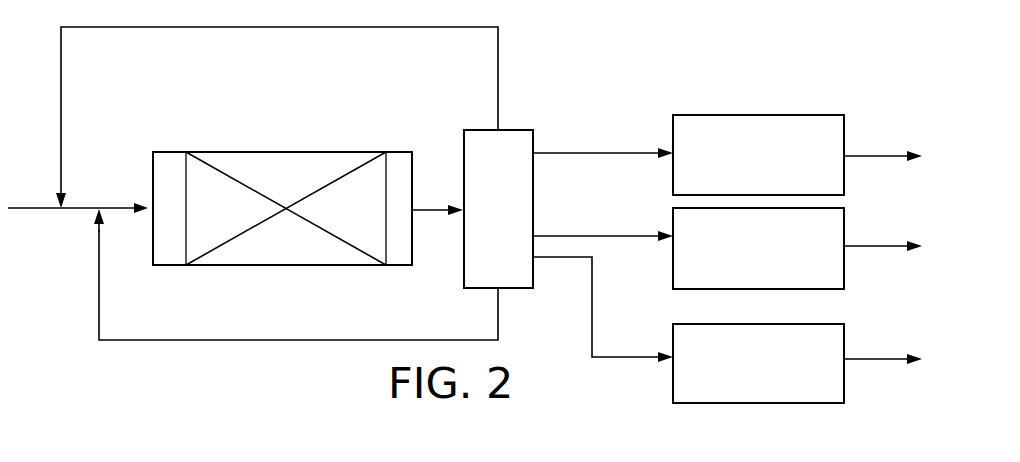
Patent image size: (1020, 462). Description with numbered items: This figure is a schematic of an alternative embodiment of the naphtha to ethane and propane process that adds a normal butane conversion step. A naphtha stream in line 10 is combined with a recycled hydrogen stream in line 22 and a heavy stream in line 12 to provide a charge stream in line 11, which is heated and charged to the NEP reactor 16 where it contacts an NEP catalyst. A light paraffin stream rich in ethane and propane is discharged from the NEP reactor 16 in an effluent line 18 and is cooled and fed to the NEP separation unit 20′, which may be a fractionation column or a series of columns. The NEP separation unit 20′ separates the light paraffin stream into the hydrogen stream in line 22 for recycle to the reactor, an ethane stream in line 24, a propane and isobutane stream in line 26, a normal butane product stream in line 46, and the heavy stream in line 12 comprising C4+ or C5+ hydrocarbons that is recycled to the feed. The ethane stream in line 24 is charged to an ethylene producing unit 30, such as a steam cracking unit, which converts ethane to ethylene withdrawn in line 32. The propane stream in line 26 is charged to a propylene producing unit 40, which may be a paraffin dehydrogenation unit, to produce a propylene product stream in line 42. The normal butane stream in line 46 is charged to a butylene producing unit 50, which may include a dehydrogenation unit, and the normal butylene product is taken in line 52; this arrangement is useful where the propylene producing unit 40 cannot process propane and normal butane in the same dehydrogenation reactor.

The naphtha stream line 10 is at (50, 211).
The charge stream line 11 is at (121, 211).
The heavy stream recycle line 12 is at (99, 278).
The NEP reactor 16 is at (177, 152).
The effluent line 18 is at (440, 206).
The NEP separation unit 20′ is at (540, 289).
The hydrogen stream line 22 is at (498, 108).
The ethane stream line 24 is at (598, 151).
The propane stream line 26 is at (600, 234).
The ethylene producing unit 30 is at (749, 115).
The ethylene product line 32 is at (892, 153).
The propylene producing unit 40 is at (772, 289).
The propylene product stream line 42 is at (893, 249).
The normal butane stream line 46 is at (632, 355).
The butylene producing unit 50 is at (783, 404).
The normal butylene product line 52 is at (884, 362).